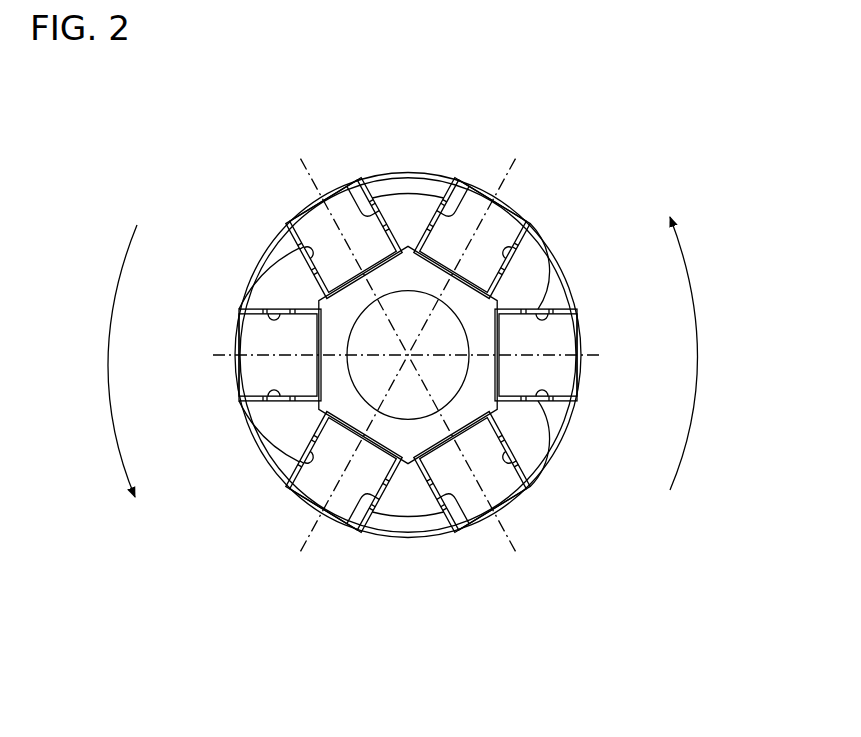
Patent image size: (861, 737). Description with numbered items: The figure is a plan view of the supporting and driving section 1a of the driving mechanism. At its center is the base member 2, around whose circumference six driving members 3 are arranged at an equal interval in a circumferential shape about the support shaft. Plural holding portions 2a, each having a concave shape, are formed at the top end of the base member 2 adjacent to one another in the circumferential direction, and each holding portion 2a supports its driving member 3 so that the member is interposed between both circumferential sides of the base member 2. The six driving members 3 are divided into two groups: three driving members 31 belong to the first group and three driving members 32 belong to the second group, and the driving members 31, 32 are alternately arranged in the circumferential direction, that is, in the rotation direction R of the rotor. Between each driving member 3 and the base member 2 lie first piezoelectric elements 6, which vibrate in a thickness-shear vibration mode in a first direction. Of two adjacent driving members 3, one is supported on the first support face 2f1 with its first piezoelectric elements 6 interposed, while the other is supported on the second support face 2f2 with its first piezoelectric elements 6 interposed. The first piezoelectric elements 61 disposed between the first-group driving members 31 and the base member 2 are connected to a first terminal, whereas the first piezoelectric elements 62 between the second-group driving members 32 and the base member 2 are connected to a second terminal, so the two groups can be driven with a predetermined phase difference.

The supporting and driving section 1a is at (630, 128).
The base member 2 is at (417, 183).
The holding portion 2a is at (327, 180).
The first support face 2f1 is at (308, 210).
The second support face 2f2 is at (347, 200).
The driving member 3 is at (410, 361).
The driving member of the first group 31 is at (483, 247).
The driving member of the second group 32 is at (313, 232).
The first piezoelectric element 6 is at (403, 415).
The first piezoelectric element of the first group 61 is at (503, 425).
The first piezoelectric element of the second group 62 is at (290, 404).
The rotation direction R is at (403, 358).